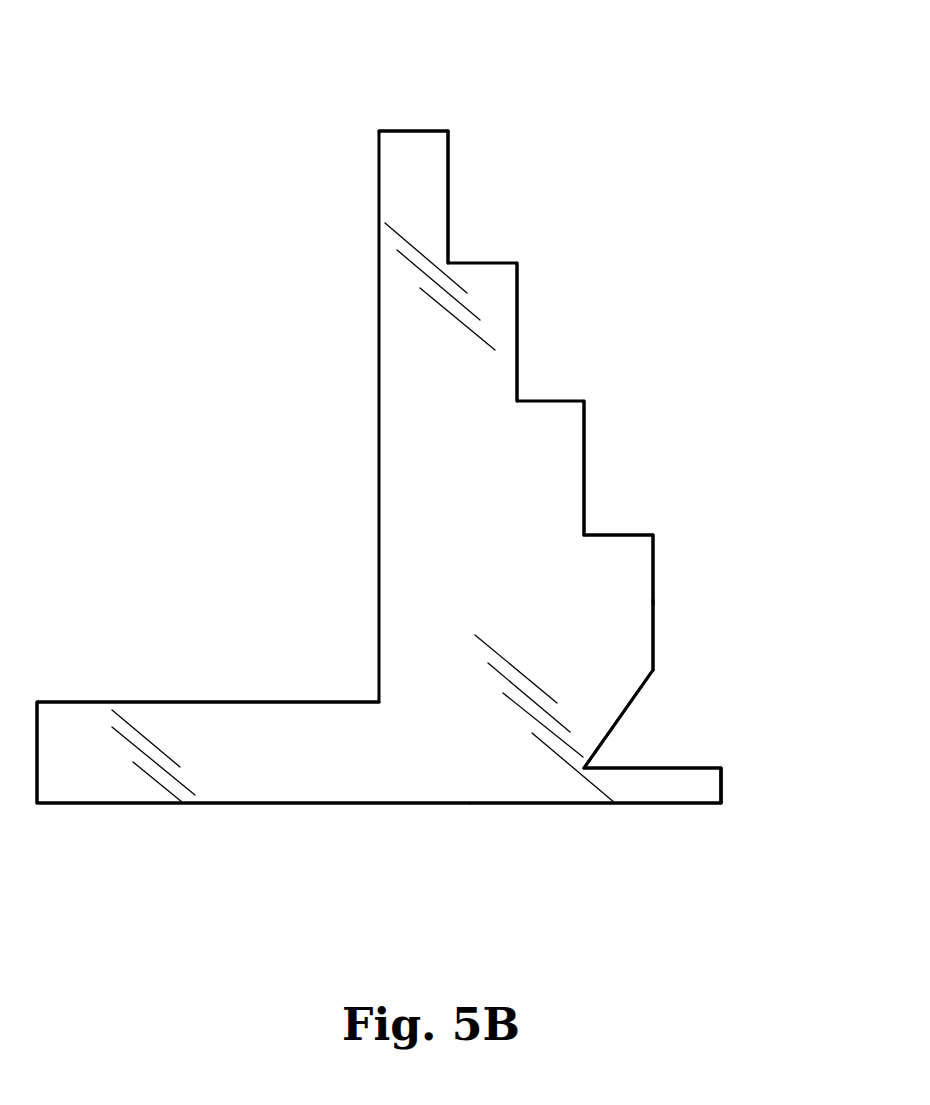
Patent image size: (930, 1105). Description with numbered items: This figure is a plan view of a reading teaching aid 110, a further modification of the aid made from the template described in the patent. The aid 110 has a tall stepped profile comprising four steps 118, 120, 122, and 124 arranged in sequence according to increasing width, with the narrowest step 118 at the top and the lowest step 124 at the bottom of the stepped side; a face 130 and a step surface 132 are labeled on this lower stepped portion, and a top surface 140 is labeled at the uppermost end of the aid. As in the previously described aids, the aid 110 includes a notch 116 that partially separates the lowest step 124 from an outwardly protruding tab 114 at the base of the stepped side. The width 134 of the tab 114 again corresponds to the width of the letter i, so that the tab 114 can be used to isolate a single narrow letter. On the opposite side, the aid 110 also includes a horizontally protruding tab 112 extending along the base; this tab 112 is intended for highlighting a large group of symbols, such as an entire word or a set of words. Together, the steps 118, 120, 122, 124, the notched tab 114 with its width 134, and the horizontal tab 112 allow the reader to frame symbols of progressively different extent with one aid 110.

The reading teaching aid 110 is at (272, 90).
The horizontally protruding tab 112 is at (152, 717).
The outwardly protruding tab 114 is at (633, 793).
The notch 116 is at (652, 731).
The first step 118 is at (441, 206).
The second step 120 is at (502, 322).
The third step 122 is at (560, 445).
The lowest step 124 is at (628, 587).
The lower vertical face 130 is at (653, 643).
The step surface 132 is at (642, 533).
The width of tab 134 is at (722, 788).
The top surface 140 is at (415, 131).